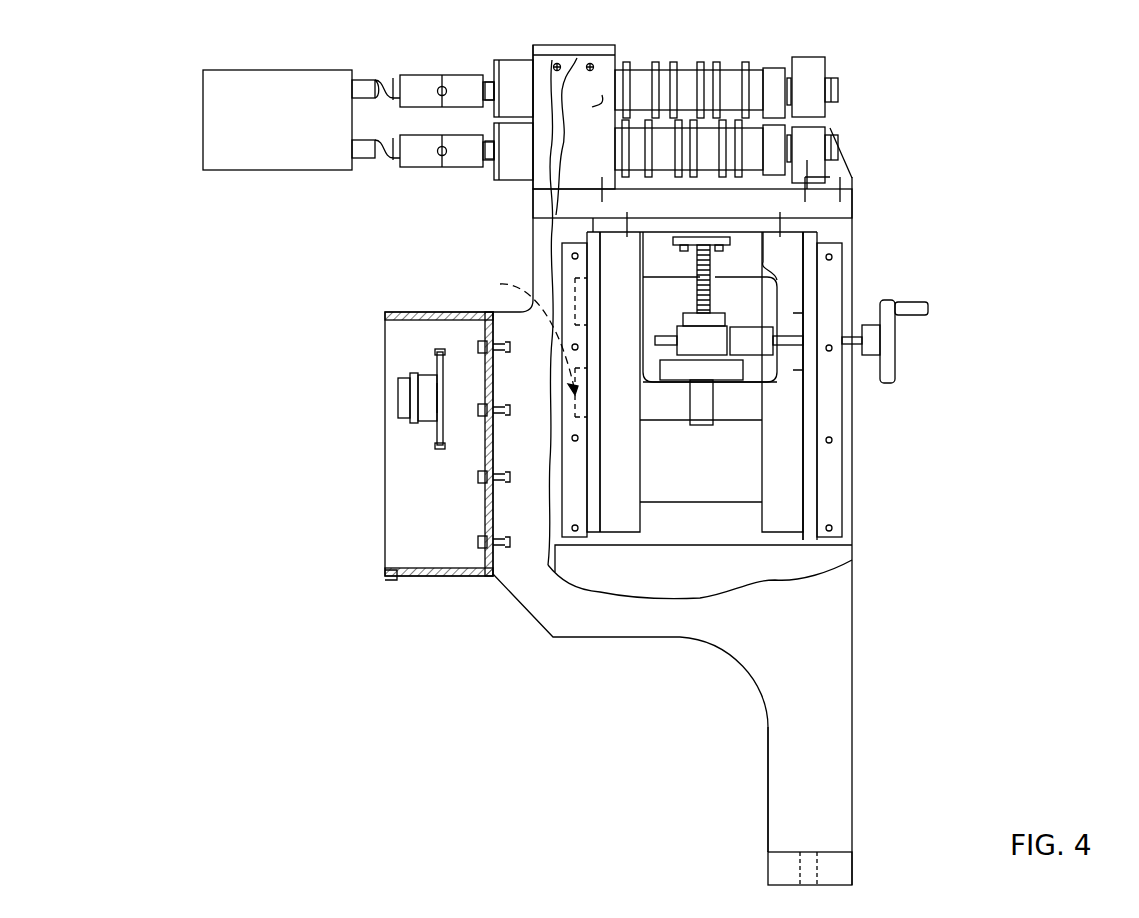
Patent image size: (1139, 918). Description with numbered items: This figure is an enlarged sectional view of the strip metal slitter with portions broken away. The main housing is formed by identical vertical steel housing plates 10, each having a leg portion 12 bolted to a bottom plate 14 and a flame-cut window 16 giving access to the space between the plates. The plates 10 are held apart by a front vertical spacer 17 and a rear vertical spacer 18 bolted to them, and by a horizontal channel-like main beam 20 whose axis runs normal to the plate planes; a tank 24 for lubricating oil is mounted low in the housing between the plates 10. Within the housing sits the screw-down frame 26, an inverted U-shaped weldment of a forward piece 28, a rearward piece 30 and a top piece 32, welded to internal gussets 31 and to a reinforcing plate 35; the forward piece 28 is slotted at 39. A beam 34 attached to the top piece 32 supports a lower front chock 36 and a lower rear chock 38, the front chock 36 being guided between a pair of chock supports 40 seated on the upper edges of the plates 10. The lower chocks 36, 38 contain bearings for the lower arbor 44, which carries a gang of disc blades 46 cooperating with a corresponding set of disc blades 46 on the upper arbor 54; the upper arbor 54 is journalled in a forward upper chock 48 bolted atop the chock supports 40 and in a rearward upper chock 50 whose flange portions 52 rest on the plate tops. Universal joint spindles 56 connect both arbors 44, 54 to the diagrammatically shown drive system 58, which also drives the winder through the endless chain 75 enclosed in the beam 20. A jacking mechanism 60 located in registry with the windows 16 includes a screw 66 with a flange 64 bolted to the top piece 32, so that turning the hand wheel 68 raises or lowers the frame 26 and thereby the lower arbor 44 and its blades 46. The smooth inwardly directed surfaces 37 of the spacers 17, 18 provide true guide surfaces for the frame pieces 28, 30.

The housing plates 10 is at (850, 727).
The leg portion 12 is at (775, 790).
The bottom plate 14 is at (838, 872).
The window 16 is at (737, 282).
The front vertical spacer 17 is at (832, 272).
The rear vertical spacer 18 is at (570, 535).
The horizontal main beam 20 is at (412, 578).
The tank 24 is at (822, 556).
The screw-down frame 26 is at (817, 497).
The forward piece 28 is at (800, 478).
The rearward piece 30 is at (592, 462).
The gussets 31 is at (762, 478).
The top piece 32 is at (610, 238).
The beam 34 is at (855, 205).
The reinforcing plate 35 is at (690, 498).
The lower front chock 36 is at (812, 170).
The inwardly directed surfaces 37 is at (860, 422).
The lower rear chock 38 is at (570, 178).
The slot 39 is at (815, 375).
The chock supports 40 is at (828, 120).
The lower arbor 44 is at (838, 146).
The disc blades 46 is at (702, 62).
The forward upper chock 48 is at (808, 58).
The rearward upper chock 50 is at (585, 105).
The flange portions 52 is at (576, 48).
The upper arbor 54 is at (840, 90).
The universal joint spindles 56 is at (462, 142).
The drive system 58 is at (243, 160).
The jacking mechanism 60 is at (728, 318).
The flange 64 is at (678, 244).
The screw 66 is at (696, 290).
The hand wheel 68 is at (893, 368).
The endless chain 75 is at (440, 447).